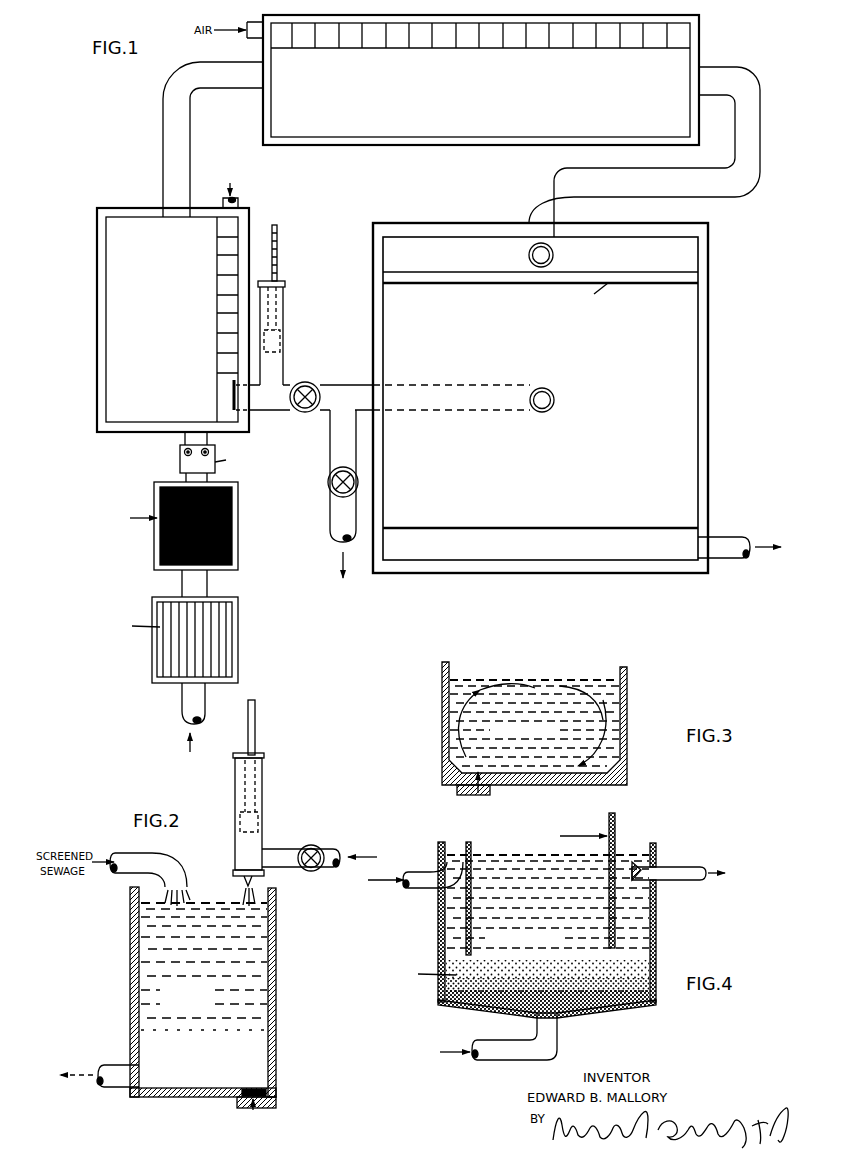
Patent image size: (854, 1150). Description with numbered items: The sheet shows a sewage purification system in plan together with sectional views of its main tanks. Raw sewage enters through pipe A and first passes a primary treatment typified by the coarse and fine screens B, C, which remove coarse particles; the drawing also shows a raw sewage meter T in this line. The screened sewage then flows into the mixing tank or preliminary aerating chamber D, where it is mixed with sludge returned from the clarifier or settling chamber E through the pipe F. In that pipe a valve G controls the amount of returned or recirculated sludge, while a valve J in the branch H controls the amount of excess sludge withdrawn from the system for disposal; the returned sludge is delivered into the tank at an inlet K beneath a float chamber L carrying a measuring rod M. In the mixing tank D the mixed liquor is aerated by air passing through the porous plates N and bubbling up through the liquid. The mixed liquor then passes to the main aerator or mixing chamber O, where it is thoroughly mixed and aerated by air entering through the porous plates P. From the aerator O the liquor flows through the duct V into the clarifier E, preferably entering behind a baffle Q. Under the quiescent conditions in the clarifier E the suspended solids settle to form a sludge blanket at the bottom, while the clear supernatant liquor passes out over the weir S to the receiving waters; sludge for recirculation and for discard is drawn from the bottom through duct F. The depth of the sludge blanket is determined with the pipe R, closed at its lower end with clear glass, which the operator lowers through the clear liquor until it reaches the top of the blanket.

In FIG. 1, the raw sewage inlet pipe A is at (181, 708).
In FIG. 1, the coarse screen B is at (233, 641).
In FIG. 1, the fine screen C is at (240, 522).
In FIG. 1, the mixing tank or preliminary aerating chamber D is at (110, 323).
In FIG. 2, the mixing tank or preliminary aerating chamber D is at (277, 992).
In FIG. 1, the clarifier or settling chamber E is at (540, 398).
In FIG. 4, the clarifier or settling chamber E is at (657, 900).
In FIG. 1, the sludge pipe or duct F is at (455, 398).
In FIG. 2, the sludge pipe or duct F is at (324, 847).
In FIG. 4, the sludge pipe or duct F is at (509, 1063).
In FIG. 1, the return sludge valve G is at (307, 382).
In FIG. 2, the return sludge valve G is at (311, 845).
In FIG. 1, the excess sludge branch H is at (334, 456).
In FIG. 1, the excess sludge valve J is at (329, 489).
In FIG. 1, the sludge inlet nozzle K is at (229, 395).
In FIG. 2, the sludge inlet nozzle K is at (256, 877).
In FIG. 1, the float chamber L is at (285, 331).
In FIG. 1, the float measuring rod M is at (279, 268).
In FIG. 2, the float measuring rod M is at (257, 780).
In FIG. 1, the porous plates N is at (236, 231).
In FIG. 2, the porous plates N is at (259, 1088).
In FIG. 1, the main aerator or mixing chamber O is at (481, 80).
In FIG. 3, the main aerator or mixing chamber O is at (441, 711).
In FIG. 1, the porous plates P is at (472, 38).
In FIG. 3, the porous plates P is at (473, 784).
In FIG. 1, the baffle Q is at (484, 284).
In FIG. 4, the baffle Q is at (471, 846).
In FIG. 4, the sludge depth measuring pipe R is at (617, 824).
In FIG. 1, the weir S is at (677, 530).
In FIG. 4, the weir S is at (645, 858).
In FIG. 1, the raw sewage meter T is at (180, 460).
In FIG. 1, the duct V is at (553, 257).
In FIG. 4, the duct V is at (430, 875).